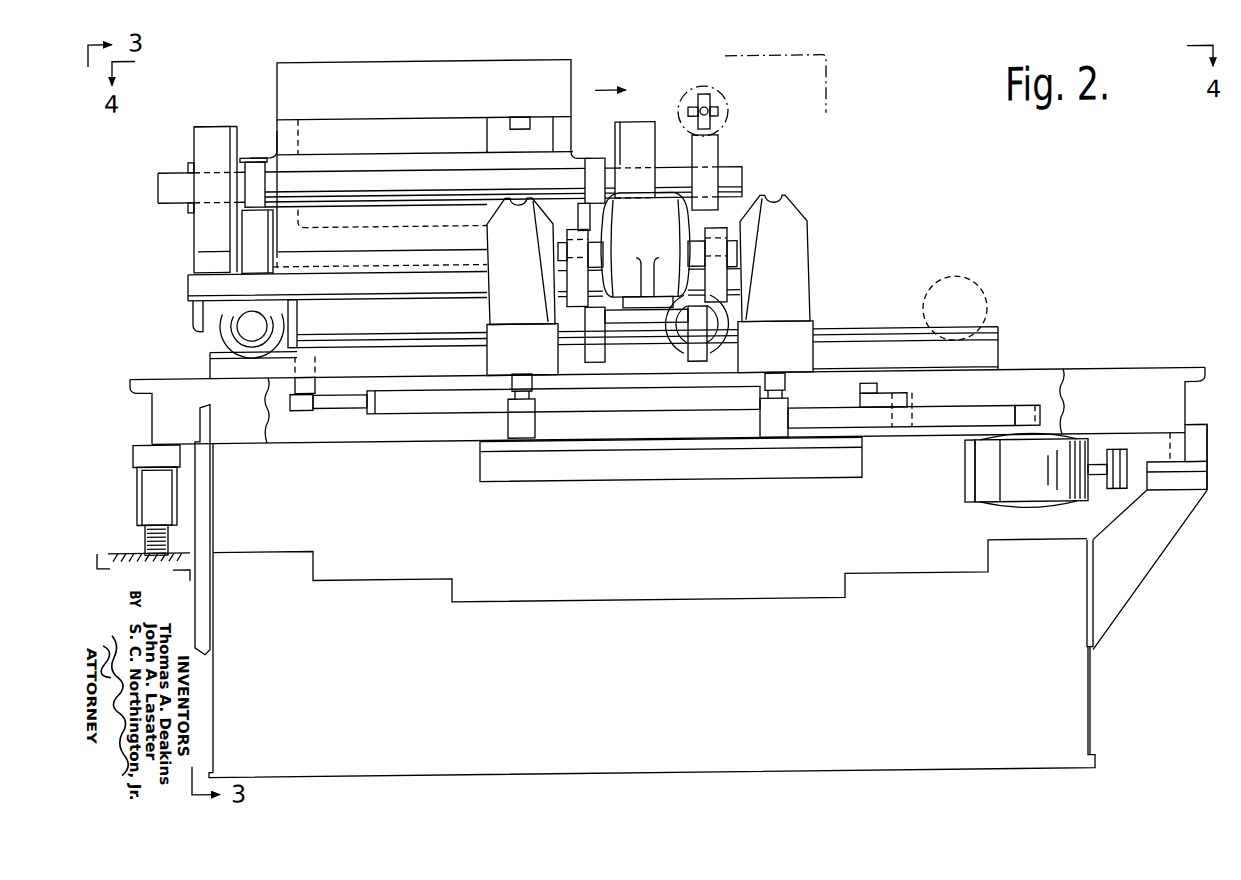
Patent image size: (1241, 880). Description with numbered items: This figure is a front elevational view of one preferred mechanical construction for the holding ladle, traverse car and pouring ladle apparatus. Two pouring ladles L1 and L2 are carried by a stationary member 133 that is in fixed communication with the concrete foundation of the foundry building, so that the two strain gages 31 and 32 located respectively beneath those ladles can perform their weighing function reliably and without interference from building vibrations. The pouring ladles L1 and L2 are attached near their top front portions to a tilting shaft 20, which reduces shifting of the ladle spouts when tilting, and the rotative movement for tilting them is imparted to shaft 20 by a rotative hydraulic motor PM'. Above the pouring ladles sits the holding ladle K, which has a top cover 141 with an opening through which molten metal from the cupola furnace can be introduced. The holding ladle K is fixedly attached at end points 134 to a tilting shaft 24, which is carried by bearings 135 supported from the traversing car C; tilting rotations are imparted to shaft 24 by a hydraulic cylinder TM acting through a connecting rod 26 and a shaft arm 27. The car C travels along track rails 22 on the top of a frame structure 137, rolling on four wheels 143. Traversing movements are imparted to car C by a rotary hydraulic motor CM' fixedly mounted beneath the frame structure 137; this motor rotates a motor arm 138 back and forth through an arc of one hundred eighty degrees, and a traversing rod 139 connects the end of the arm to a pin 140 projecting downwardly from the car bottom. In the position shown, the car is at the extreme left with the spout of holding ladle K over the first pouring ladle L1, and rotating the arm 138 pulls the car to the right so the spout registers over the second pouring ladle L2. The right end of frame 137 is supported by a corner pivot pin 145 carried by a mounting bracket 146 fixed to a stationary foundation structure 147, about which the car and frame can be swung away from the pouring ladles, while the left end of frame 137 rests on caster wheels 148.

The top cover 141 is at (480, 58).
The holding ladle K is at (438, 115).
The tilting shaft 24 is at (158, 183).
The end points 134 is at (252, 175).
The bearings 135 is at (208, 218).
The traversing car C is at (182, 279).
The wheels 143 is at (223, 323).
The track rails 22 is at (208, 346).
The frame structure 137 is at (148, 400).
The stationary foundation structure 147 is at (1091, 680).
The mounting bracket 146 is at (1152, 553).
The corner pivot pin 145 is at (1173, 444).
The hydraulic motor CM' is at (1021, 470).
The stationary member 133 is at (683, 481).
The traversing rod 139 is at (674, 413).
The pin 140 is at (308, 416).
The strain gage 31 is at (508, 420).
The strain gage 32 is at (790, 424).
The motor arm 138 is at (952, 408).
The caster wheels 148 is at (143, 527).
The first pouring ladle L1 is at (522, 287).
The second pouring ladle L2 is at (775, 284).
The tilting shaft 20 is at (592, 262).
The hydraulic motor PM' is at (669, 250).
The hydraulic cylinder TM is at (700, 87).
The connecting rod 26 is at (711, 108).
The shaft arm 27 is at (718, 146).